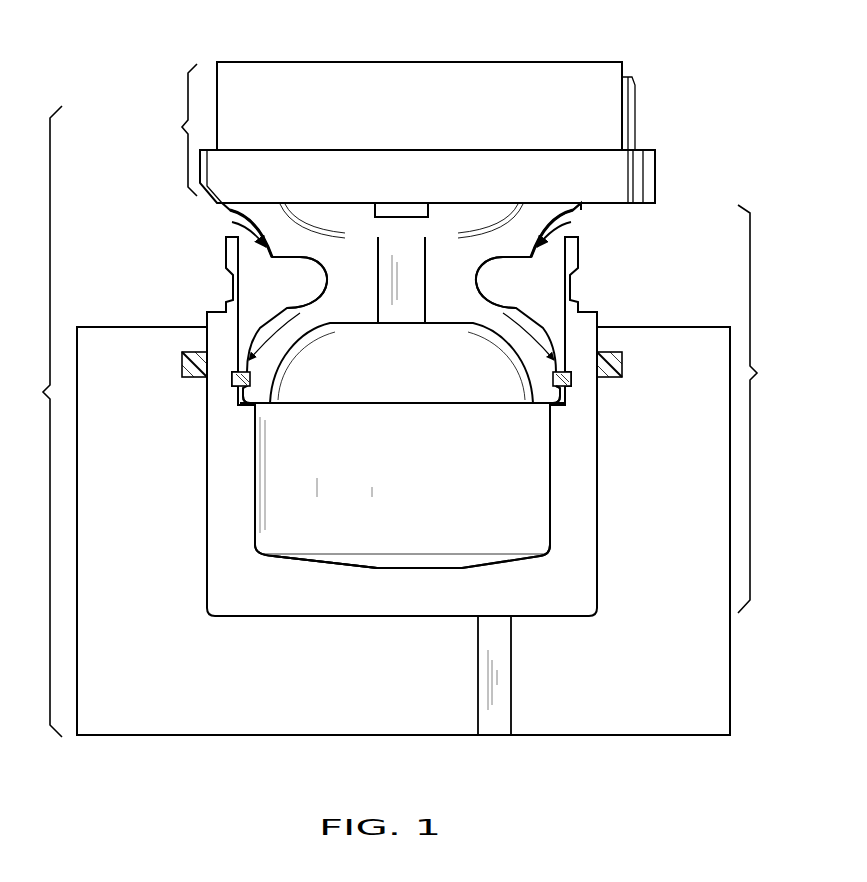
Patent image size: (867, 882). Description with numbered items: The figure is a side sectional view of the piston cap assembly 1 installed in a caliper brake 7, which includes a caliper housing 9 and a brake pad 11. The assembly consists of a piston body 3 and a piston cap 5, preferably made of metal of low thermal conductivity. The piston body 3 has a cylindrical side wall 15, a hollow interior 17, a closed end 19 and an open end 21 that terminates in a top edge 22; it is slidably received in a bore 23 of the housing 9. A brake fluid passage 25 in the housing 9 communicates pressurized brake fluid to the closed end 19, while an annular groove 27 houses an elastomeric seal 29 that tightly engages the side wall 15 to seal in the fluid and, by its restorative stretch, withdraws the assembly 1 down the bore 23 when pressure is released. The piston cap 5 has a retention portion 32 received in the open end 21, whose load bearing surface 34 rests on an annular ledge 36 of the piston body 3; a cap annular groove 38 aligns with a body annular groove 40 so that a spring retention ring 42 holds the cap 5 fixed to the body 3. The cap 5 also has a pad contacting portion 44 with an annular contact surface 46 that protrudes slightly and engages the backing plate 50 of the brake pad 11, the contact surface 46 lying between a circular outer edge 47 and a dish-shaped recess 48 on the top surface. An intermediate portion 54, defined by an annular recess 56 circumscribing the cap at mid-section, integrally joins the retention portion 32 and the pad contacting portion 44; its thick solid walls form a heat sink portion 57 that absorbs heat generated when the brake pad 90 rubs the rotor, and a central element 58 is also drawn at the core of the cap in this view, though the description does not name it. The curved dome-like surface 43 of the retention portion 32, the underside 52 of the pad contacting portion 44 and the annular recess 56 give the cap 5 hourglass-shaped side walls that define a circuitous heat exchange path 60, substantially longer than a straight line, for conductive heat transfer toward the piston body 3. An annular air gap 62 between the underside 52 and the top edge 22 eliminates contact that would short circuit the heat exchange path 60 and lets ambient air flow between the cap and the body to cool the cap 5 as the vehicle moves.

The piston cap assembly 1 is at (757, 409).
The piston body 3 is at (200, 441).
The piston cap 5 is at (546, 262).
The caliper brake 7 is at (38, 421).
The caliper housing 9 is at (100, 711).
The brake pad 11 is at (427, 113).
The cylindrical side wall 15 is at (207, 500).
The hollow interior 17 is at (381, 471).
The closed end 19 is at (345, 572).
The open end 21 is at (248, 243).
The top edge 22 is at (227, 251).
The bore 23 is at (592, 494).
The brake fluid passage 25 is at (502, 706).
The annular groove 27 is at (182, 370).
The elastomeric seal 29 is at (622, 364).
The retention portion 32 is at (532, 335).
The load bearing surface 34 is at (537, 404).
The annular ledge 36 is at (271, 403).
The cap annular groove 38 is at (253, 383).
The body annular groove 40 is at (572, 386).
The spring retention ring 42 is at (553, 380).
The curved dome-like surface 43 is at (247, 352).
The pad contacting portion 44 is at (558, 228).
The annular contact surface 46 is at (545, 202).
The circular outer edge 47 is at (590, 207).
The dish-shaped recess 48 is at (302, 228).
The backing plate 50 is at (622, 172).
The underside 52 is at (228, 228).
The intermediate portion 54 is at (466, 288).
The annular recess 56 is at (313, 294).
The heat sink portion 57 is at (327, 330).
The shaft 58 is at (416, 290).
The heat exchange path 60 is at (322, 250).
The annular air gap 62 is at (553, 233).
The brake pad 90 is at (604, 73).